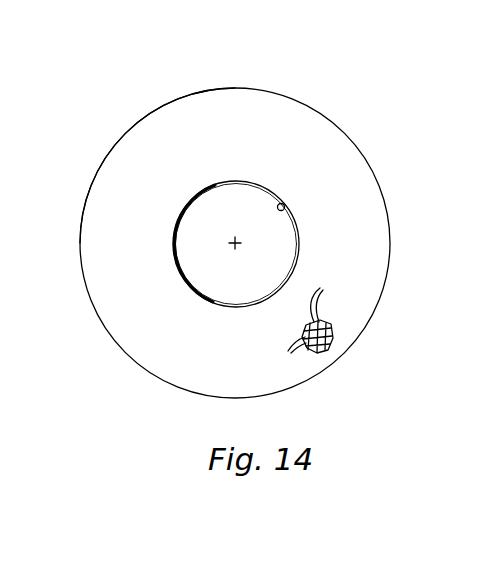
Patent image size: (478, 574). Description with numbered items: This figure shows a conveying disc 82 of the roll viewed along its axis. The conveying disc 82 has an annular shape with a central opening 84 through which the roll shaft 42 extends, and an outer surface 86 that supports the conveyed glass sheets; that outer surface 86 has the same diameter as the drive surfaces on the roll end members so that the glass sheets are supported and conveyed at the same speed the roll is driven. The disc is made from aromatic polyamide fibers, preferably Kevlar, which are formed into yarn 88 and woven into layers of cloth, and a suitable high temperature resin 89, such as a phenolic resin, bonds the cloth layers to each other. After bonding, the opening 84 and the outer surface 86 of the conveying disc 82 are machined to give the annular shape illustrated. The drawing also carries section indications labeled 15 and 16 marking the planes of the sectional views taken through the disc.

The conveying disc 82 is at (103, 157).
The outer surface 86 is at (357, 147).
The roll shaft 42 is at (264, 184).
The central opening 84 is at (285, 207).
The yarn 88 is at (308, 323).
The high temperature resin 89 is at (333, 347).
The section line 15- 15 is at (427, 68).
The section line 16- 16 is at (262, 268).